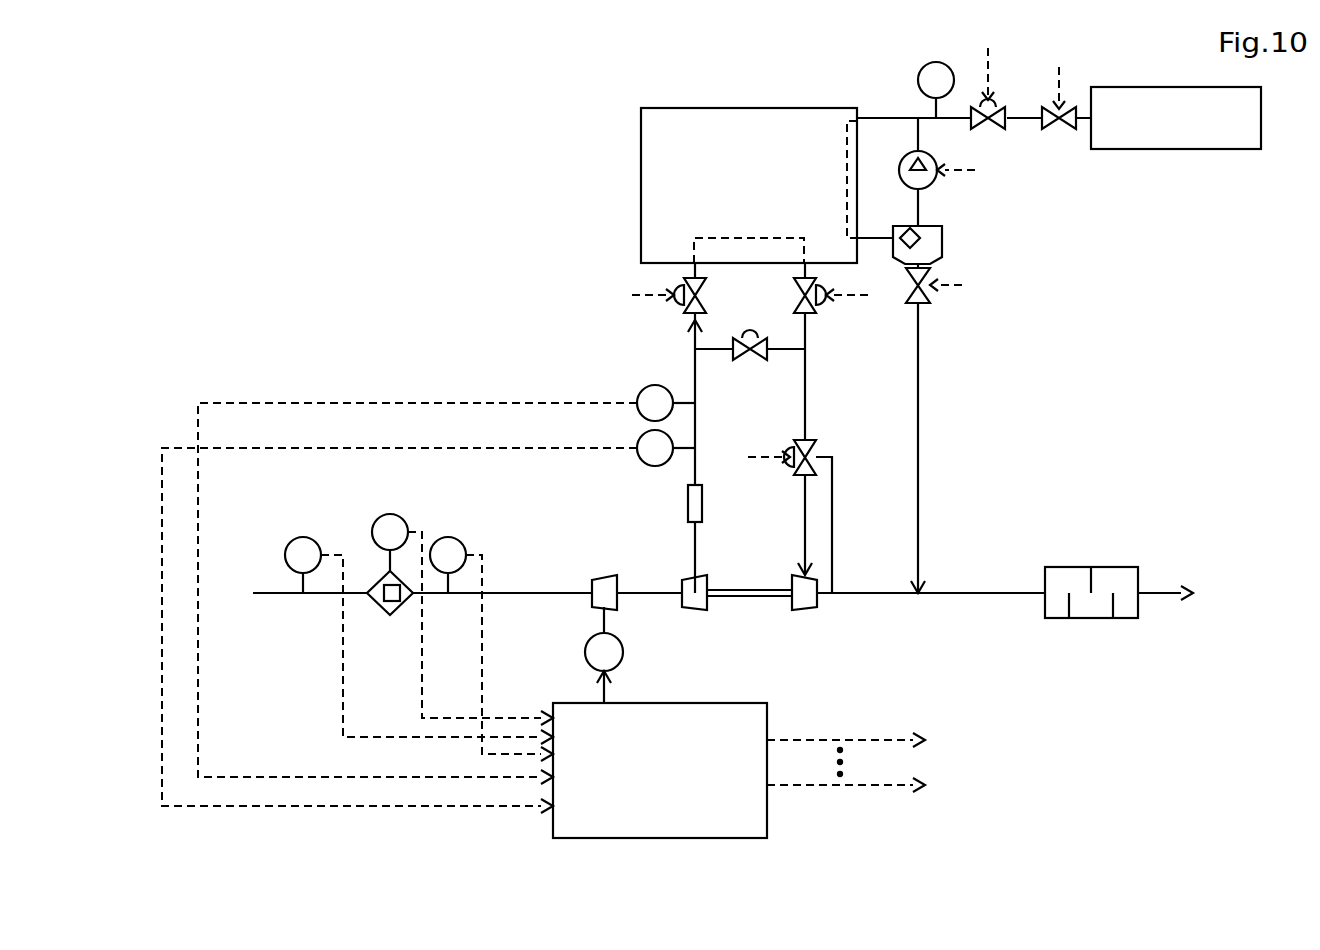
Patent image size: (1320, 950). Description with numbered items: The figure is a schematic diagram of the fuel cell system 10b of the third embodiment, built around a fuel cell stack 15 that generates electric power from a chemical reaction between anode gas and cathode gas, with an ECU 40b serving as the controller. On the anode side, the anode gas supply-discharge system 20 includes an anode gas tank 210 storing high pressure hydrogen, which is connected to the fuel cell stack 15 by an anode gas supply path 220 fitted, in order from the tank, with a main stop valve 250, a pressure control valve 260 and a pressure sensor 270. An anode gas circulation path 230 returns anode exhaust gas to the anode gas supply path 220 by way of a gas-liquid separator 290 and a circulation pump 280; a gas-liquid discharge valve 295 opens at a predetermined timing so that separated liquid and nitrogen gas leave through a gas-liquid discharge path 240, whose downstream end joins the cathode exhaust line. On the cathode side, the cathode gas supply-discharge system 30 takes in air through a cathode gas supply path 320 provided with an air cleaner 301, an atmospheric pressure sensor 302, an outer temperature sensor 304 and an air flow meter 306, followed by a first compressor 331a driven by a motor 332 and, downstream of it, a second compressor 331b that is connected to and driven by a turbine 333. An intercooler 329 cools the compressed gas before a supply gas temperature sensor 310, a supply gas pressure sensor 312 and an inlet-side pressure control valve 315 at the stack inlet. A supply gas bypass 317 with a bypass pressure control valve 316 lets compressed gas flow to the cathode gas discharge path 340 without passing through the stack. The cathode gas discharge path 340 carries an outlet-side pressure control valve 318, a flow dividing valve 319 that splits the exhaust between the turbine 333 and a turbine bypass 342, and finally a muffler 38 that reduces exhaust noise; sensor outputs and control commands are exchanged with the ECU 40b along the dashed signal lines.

The fuel cell system 10b is at (235, 112).
The fuel cell stack 15 is at (748, 108).
The anode gas supply-discharge system 20 is at (1040, 213).
The anode gas tank 210 is at (1168, 87).
The anode gas supply path 220 is at (882, 116).
The anode gas circulation path 230 is at (875, 237).
The gas-liquid discharge path 240 is at (920, 478).
The main stop valve 250 is at (1063, 130).
The pressure control valve 260 is at (995, 130).
The pressure sensor 270 is at (935, 62).
The circulation pump 280 is at (940, 150).
The gas-liquid separator 290 is at (942, 240).
The gas-liquid discharge valve 295 is at (925, 300).
The cathode gas supply-discharge system 30 is at (352, 502).
The air cleaner 301 is at (390, 616).
The atmospheric pressure sensor 302 is at (303, 537).
The outer temperature sensor 304 is at (390, 514).
The air flow meter 306 is at (448, 537).
The supply gas temperature sensor 310 is at (642, 460).
The supply gas pressure sensor 312 is at (647, 388).
The inlet-side pressure control valve 315 is at (688, 316).
The bypass pressure control valve 316 is at (753, 360).
The supply gas bypass 317 is at (800, 349).
The outlet-side pressure control valve 318 is at (795, 295).
The flow dividing valve 319 is at (798, 444).
The cathode gas supply path 320 is at (688, 470).
The intercooler 329 is at (705, 487).
The first compressor 331a is at (601, 578).
The second compressor 331b is at (692, 611).
The motor 332 is at (585, 652).
The turbine 333 is at (803, 613).
The cathode gas discharge path 340 is at (806, 405).
The turbine bypass 342 is at (834, 525).
The muffler 38 is at (1105, 567).
The ECU 40b is at (722, 703).